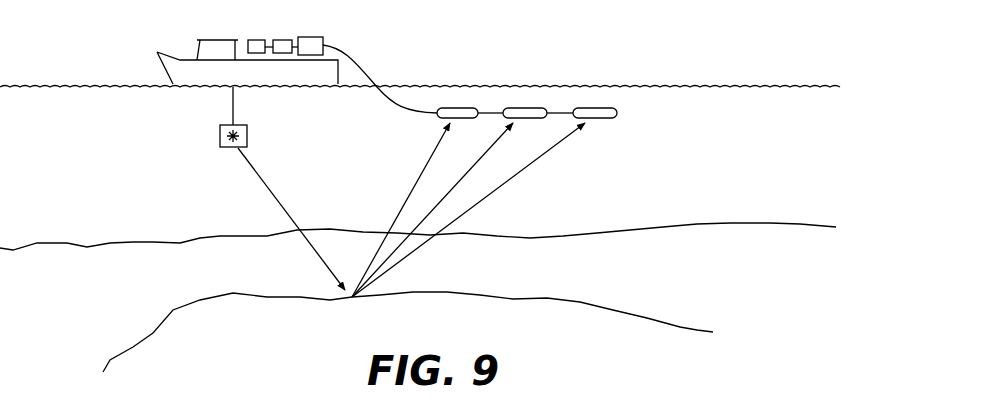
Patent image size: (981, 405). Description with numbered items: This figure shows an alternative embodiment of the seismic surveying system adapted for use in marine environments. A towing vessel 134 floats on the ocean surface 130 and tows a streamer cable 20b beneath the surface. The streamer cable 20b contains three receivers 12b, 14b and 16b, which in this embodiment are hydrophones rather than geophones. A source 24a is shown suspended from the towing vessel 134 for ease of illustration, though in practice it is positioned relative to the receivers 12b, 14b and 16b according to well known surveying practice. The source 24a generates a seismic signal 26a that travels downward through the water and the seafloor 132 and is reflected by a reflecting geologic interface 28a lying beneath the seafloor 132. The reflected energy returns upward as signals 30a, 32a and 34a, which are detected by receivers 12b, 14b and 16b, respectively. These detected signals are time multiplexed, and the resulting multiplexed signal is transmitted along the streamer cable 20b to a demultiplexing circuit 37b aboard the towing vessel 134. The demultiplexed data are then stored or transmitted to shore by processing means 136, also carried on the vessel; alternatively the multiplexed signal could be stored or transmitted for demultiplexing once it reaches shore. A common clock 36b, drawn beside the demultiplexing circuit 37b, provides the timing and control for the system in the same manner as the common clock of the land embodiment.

The ocean surface 130 is at (97, 84).
The towing vessel 134 is at (215, 38).
The processing means 136 is at (258, 39).
The demultiplexing circuit 37b is at (282, 40).
The common clock 36b is at (322, 37).
The streamer cable 20b is at (352, 59).
The receiver 16b is at (453, 108).
The receiver 14b is at (522, 108).
The receiver 12b is at (592, 108).
The source 24a is at (248, 132).
The seismic signal 26a is at (265, 182).
The signal 34a is at (430, 164).
The signal 32a is at (480, 164).
The signal 30a is at (540, 164).
The seafloor 132 is at (110, 242).
The reflecting geologic interface 28a is at (153, 333).